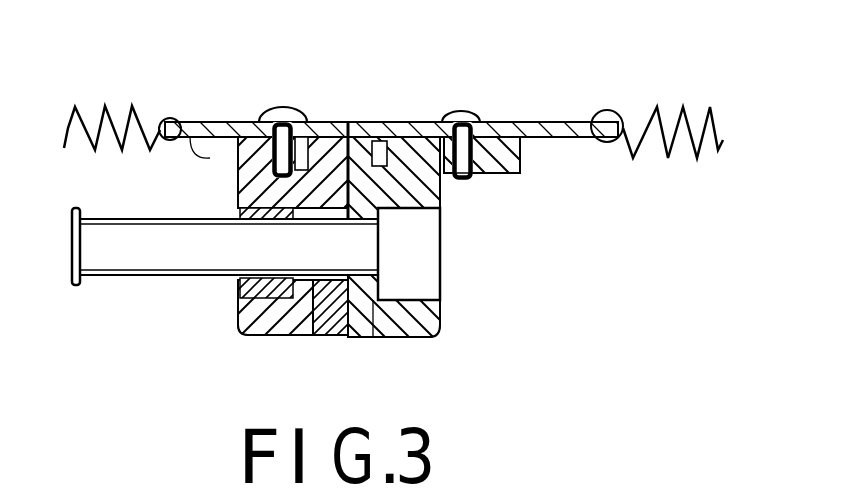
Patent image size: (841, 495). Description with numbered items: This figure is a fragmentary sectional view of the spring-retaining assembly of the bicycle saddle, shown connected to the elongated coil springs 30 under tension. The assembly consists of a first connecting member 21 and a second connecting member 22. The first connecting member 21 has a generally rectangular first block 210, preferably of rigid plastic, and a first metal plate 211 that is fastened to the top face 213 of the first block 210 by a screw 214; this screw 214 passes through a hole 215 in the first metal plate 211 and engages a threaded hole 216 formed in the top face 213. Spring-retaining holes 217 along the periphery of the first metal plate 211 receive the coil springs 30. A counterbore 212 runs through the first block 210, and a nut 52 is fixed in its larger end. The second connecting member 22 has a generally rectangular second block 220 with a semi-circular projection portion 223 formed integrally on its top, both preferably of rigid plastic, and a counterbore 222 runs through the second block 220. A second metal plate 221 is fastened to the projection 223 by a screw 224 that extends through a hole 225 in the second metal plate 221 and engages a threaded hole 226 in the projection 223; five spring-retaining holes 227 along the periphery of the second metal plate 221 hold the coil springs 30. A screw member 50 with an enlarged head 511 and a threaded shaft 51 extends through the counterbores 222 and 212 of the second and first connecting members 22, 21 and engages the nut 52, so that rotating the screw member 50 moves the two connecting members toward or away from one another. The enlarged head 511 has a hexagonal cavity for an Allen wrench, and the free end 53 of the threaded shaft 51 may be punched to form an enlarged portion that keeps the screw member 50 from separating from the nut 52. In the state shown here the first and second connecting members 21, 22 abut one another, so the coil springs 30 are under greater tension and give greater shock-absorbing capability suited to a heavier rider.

The coil spring 30 is at (108, 102).
The spring-retaining hole 217 is at (218, 120).
The spring-retaining hole 227 is at (567, 145).
The top face 213 is at (237, 142).
The first connecting member 21 is at (250, 337).
The first block 210 is at (240, 313).
The counterbore 212 is at (313, 337).
The first metal plate 211 is at (247, 117).
The screw 214 is at (295, 117).
The hole 215 is at (310, 120).
The threaded hole 216 is at (352, 138).
The second connecting member 22 is at (441, 312).
The second block 220 is at (424, 325).
The counterbore 222 is at (372, 322).
The second metal plate 221 is at (437, 120).
The screw 224 is at (473, 117).
The hole 225 is at (510, 120).
The threaded hole 226 is at (490, 175).
The semi-circular projection portion 223 is at (523, 175).
The nut 52 is at (238, 211).
The threaded shaft 51 is at (191, 276).
The enlarged head 511 is at (432, 265).
The free end 53 is at (72, 252).
The screw member 50 is at (452, 287).